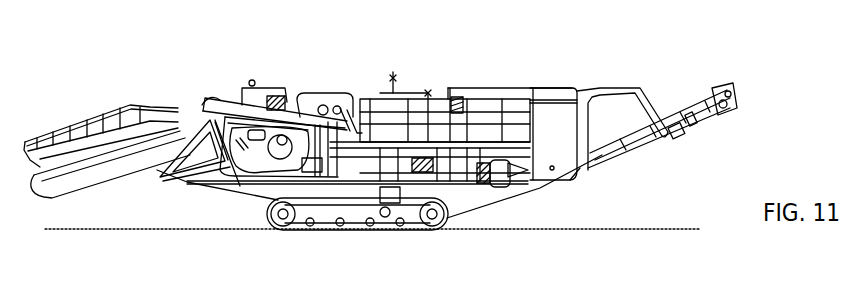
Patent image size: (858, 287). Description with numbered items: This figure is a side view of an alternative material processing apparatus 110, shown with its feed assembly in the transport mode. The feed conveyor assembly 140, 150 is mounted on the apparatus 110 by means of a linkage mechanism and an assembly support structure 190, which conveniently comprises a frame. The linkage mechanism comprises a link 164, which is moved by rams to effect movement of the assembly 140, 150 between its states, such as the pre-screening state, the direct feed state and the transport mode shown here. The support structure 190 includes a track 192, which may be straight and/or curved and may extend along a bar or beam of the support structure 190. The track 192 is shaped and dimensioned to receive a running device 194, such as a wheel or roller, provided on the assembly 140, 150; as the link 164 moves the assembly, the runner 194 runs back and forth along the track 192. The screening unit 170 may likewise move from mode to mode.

The material processing apparatus 110 is at (488, 115).
The feed conveyor assembly 140 is at (240, 94).
The feed conveyor assembly 150 is at (325, 100).
The link 164 is at (175, 172).
The screening unit 170 is at (237, 153).
The assembly support structure 190 is at (197, 117).
The track 192 is at (300, 107).
The running device 194 is at (389, 78).